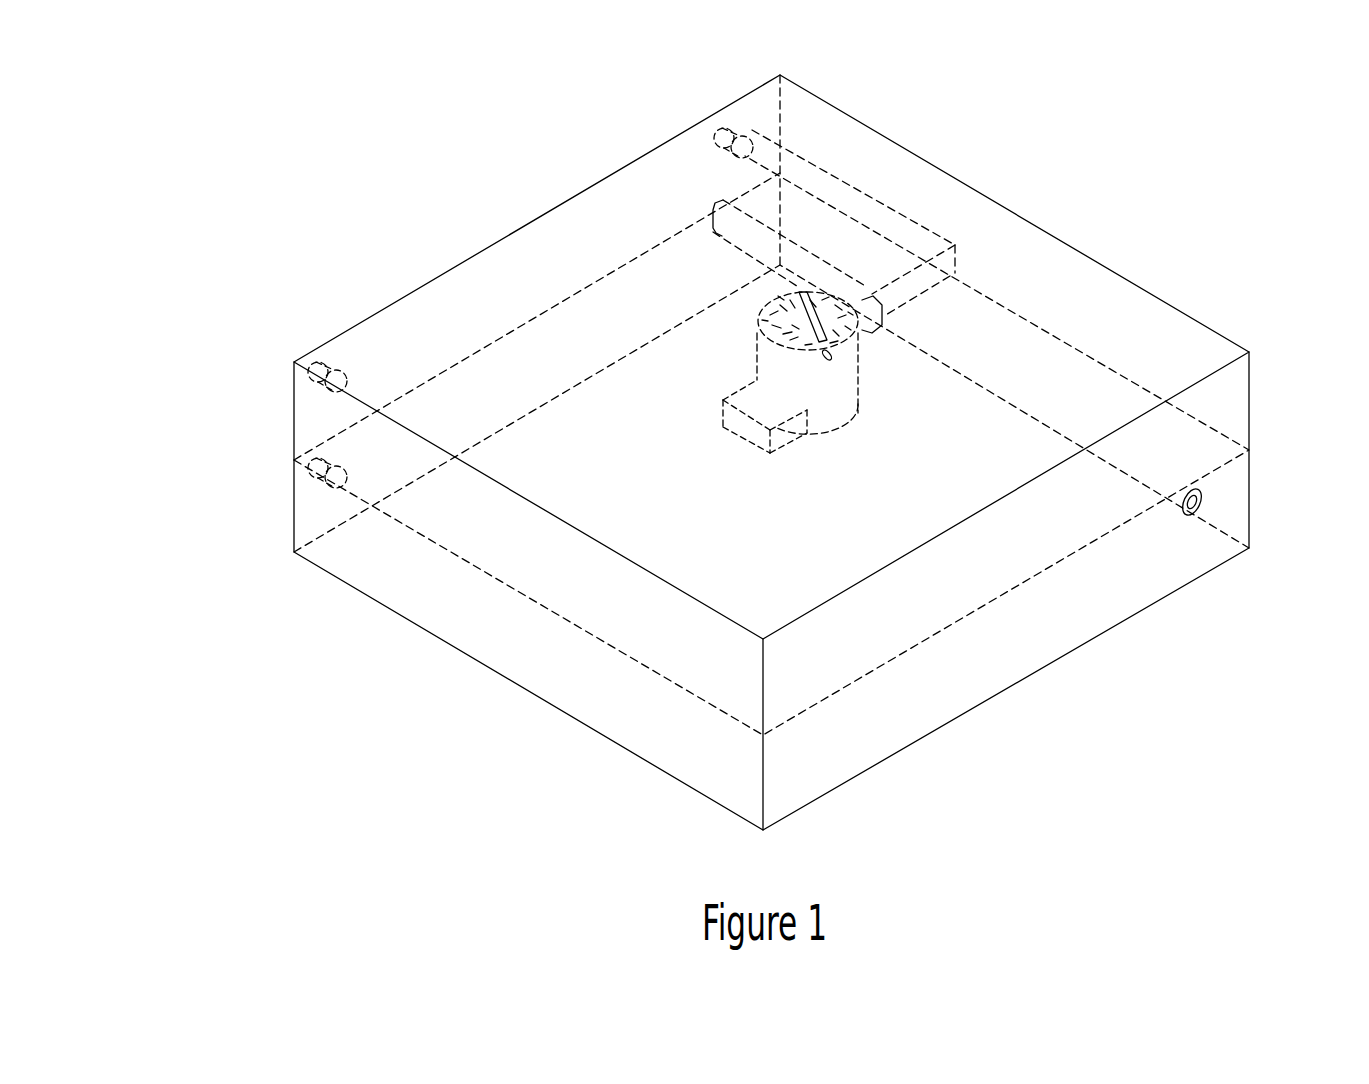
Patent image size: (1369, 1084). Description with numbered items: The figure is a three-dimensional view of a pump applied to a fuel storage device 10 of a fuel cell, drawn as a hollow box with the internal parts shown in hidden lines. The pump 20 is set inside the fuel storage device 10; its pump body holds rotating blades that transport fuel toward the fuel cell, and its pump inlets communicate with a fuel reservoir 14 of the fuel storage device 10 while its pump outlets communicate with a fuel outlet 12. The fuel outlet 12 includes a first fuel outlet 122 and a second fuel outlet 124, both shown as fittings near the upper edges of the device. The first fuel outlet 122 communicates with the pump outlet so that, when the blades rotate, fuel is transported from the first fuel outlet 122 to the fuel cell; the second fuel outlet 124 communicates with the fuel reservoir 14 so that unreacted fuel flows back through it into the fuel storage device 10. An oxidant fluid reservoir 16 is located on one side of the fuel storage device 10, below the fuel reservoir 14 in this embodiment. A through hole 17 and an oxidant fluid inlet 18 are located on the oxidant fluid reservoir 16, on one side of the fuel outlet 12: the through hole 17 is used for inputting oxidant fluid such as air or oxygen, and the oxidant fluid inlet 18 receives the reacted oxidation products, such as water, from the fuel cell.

The fuel storage device 10 is at (1127, 214).
The fuel outlet 12 is at (597, 108).
The fuel reservoir 14 is at (536, 277).
The oxidant fluid reservoir 16 is at (1068, 613).
The through hole 17 is at (1202, 501).
The oxidant fluid inlet 18 is at (318, 482).
The pump 20 is at (692, 478).
The first fuel outlet 122 is at (727, 135).
The second fuel outlet 124 is at (313, 366).